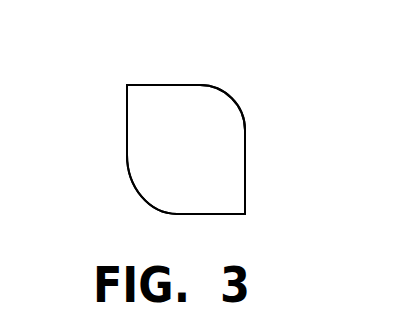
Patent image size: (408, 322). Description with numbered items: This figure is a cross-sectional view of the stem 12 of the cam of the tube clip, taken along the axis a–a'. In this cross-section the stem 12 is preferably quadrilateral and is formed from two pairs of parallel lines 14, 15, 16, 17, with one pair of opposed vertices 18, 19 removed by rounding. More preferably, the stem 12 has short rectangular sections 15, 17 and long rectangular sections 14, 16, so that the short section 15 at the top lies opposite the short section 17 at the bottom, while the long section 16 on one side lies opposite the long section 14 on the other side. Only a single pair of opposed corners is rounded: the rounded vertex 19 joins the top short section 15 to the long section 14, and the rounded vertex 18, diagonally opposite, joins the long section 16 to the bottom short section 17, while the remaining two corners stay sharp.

The stem 12 is at (198, 145).
The long rectangular section 14 is at (245, 167).
The short rectangular section 15 is at (170, 85).
The long rectangular section 16 is at (125, 135).
The short rectangular section 17 is at (207, 214).
The rounded vertex 18 is at (143, 201).
The rounded vertex 19 is at (225, 93).